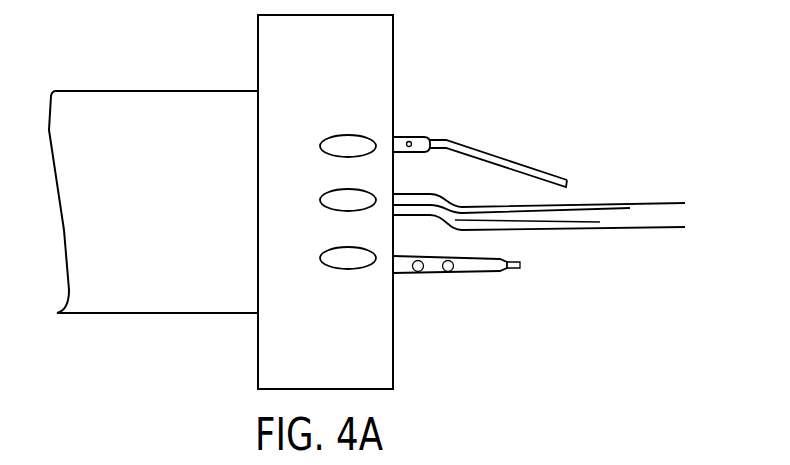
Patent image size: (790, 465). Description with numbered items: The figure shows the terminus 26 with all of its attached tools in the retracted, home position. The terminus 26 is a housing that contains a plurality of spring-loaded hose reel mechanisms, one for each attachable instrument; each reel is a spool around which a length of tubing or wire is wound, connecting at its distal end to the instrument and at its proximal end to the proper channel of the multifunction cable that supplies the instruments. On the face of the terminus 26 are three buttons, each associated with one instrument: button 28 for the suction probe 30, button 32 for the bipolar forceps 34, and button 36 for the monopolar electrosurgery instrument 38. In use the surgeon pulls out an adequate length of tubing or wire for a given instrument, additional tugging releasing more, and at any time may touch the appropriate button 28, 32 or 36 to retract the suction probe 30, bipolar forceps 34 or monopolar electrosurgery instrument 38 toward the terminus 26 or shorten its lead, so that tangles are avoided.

The terminus 26 is at (393, 44).
The button 28 is at (352, 146).
The suction probe 30 is at (523, 164).
The button 32 is at (362, 200).
The bipolar forceps 34 is at (658, 203).
The button 36 is at (362, 258).
The monopolar electrosurgery instrument 38 is at (493, 273).